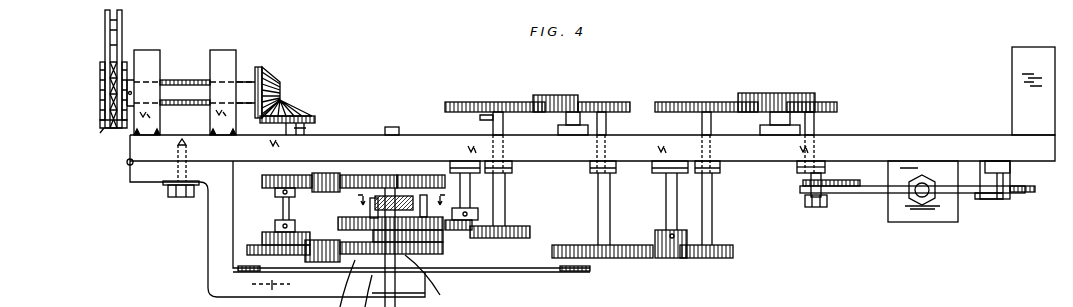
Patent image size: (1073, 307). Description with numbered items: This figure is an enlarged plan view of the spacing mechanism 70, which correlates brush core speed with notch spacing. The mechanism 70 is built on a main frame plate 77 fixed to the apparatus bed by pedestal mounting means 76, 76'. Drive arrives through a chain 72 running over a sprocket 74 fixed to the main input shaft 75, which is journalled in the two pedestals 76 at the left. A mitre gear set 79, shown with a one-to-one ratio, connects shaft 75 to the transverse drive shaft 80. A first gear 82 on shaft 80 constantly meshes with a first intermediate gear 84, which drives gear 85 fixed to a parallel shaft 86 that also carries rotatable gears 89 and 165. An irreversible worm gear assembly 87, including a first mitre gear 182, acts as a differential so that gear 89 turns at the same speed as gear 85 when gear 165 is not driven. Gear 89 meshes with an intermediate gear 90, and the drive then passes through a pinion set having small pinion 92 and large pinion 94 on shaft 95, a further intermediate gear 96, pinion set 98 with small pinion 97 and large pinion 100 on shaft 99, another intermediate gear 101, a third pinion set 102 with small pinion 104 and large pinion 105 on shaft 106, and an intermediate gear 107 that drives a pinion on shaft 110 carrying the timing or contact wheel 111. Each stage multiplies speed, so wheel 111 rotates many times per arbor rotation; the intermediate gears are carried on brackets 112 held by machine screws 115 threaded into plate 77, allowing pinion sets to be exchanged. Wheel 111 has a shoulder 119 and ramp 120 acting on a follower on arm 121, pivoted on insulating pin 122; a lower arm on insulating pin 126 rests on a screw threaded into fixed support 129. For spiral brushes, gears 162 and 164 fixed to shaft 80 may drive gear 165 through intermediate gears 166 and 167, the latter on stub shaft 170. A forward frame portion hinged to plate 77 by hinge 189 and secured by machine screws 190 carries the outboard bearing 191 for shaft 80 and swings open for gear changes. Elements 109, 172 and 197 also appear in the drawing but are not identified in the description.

The spacing mechanism 70 is at (148, 222).
The chain 72 is at (104, 38).
The sprocket 74 is at (100, 133).
The main input shaft 75 is at (173, 88).
The pedestal mounting means 76 is at (195, 75).
The pedestal mounting means 76' is at (1008, 87).
The plate 77 is at (930, 135).
The mitre gear set 79 is at (295, 87).
The transverse drive shaft 80 is at (307, 128).
The first gear 82 is at (300, 175).
The first intermediate gear 84 is at (330, 176).
The gear 85 is at (414, 174).
The shaft 86 is at (396, 127).
The irreversible worm gear assembly 87 is at (361, 212).
The gear 89 is at (425, 250).
The intermediate gear 90 is at (458, 232).
The small pinion 92 is at (498, 240).
The large pinion 94 is at (456, 102).
The shaft 95 is at (492, 118).
The intermediate gear 96 is at (540, 95).
The small pinion 97 is at (582, 100).
The pinion set 98 is at (592, 202).
The shaft 99 is at (606, 118).
The large pinion 100 is at (595, 258).
The intermediate gear 101 is at (660, 262).
The pinion set 102 is at (722, 182).
The small pinion 104 is at (726, 258).
The large pinion 105 is at (668, 102).
The shaft 106 is at (712, 120).
The intermediate gear 107 is at (780, 78).
The gear 109 is at (840, 80).
The shaft 110 is at (810, 117).
The timing or contact wheel 111 is at (768, 195).
The bracket 112 is at (447, 165).
The machine screw 115 is at (500, 165).
The shoulder 119 is at (818, 185).
The ramp 120 is at (802, 195).
The arm 121 is at (840, 195).
The pivot pin 122 is at (1000, 172).
The pivot pin 126 is at (1030, 193).
The threaded fixed support 129 is at (898, 168).
The gear 162 is at (262, 237).
The gear 164 is at (250, 250).
The third gear 165 is at (420, 290).
The first intermediate gear 166 is at (283, 213).
The intermediate gear 167 is at (308, 283).
The stub shaft 170 is at (323, 263).
The plate 172 is at (560, 272).
The first mitre gear 182 is at (372, 175).
The hinge 189 is at (126, 162).
The machine screws 190 is at (170, 189).
The outboard bearing 191 is at (254, 285).
The shaft 197 is at (344, 291).